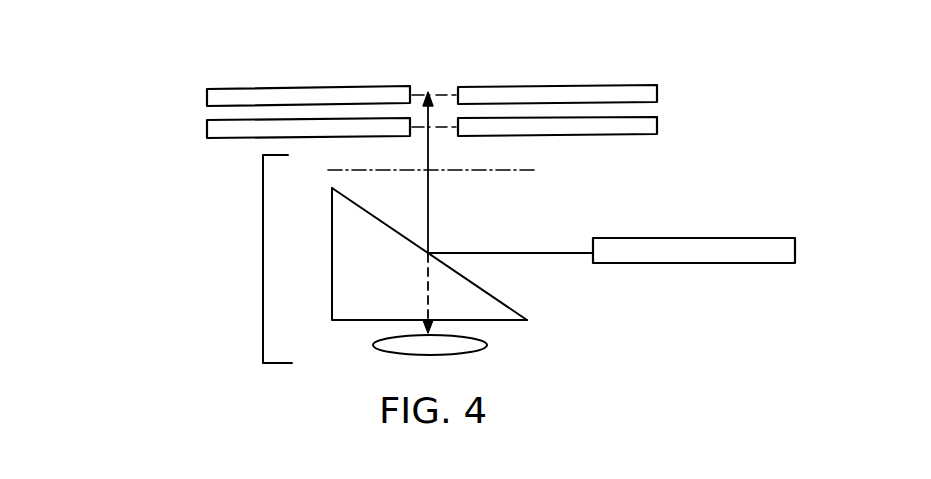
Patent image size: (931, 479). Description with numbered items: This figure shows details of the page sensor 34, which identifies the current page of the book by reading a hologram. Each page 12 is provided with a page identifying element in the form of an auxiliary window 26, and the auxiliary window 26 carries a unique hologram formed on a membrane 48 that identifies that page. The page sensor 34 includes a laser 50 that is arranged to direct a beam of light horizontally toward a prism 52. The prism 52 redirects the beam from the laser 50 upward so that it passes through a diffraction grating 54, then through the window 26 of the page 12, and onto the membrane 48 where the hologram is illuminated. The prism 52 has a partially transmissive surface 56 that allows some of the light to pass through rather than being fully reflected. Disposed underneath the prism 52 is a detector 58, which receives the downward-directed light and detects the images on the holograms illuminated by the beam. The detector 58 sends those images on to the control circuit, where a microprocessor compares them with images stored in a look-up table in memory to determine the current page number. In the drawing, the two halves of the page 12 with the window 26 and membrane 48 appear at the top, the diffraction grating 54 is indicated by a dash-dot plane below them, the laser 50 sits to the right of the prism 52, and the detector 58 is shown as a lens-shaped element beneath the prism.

The page 12 is at (664, 91).
The auxiliary window 26 is at (418, 86).
The page sensor 34 is at (263, 239).
The membrane 48 is at (442, 90).
The laser 50 is at (790, 226).
The prism 52 is at (556, 321).
The diffraction grating 54 is at (863, 181).
The partially transmissive surface 56 is at (490, 283).
The detector 58 is at (525, 359).